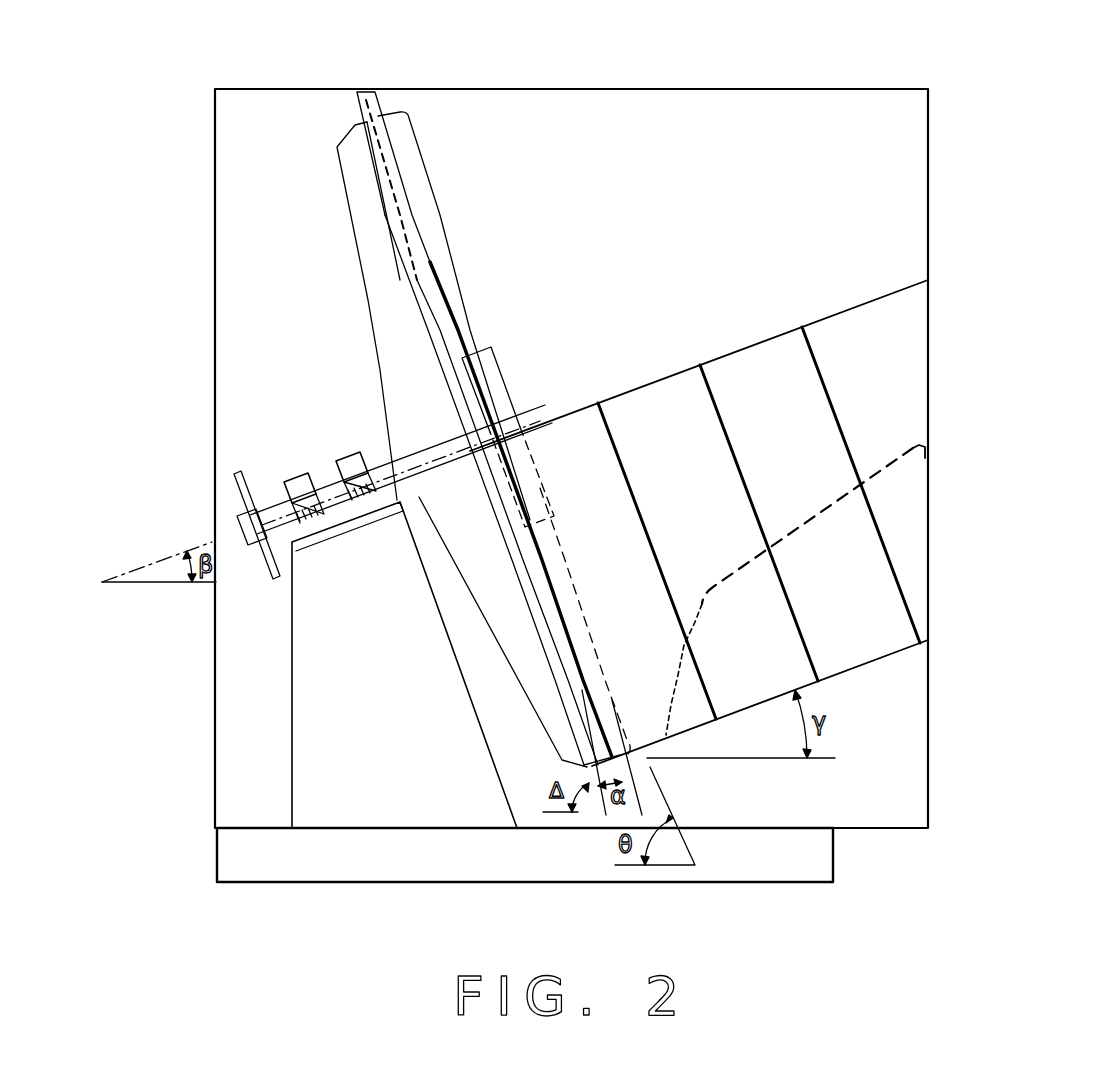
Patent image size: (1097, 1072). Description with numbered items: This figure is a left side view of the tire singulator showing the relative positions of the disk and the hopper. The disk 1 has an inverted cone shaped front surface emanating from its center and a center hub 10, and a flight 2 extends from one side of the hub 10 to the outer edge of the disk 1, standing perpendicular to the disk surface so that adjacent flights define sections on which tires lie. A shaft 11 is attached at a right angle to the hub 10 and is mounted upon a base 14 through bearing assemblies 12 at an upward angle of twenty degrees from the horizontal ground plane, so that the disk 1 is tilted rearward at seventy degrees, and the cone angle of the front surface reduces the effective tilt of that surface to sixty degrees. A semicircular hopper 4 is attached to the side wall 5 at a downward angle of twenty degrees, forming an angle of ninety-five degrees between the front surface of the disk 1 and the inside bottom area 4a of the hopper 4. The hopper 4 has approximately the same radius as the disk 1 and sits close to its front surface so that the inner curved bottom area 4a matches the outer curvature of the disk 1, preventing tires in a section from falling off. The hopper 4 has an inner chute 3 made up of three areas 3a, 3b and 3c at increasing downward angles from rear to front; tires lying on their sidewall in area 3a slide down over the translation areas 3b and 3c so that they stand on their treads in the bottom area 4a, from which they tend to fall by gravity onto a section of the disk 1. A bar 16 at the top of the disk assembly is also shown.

The disk 1 is at (425, 250).
The flight 2 is at (462, 243).
The inner chute 3 is at (893, 458).
The first chute area 3a is at (787, 537).
The translation area 3b is at (702, 607).
The translation area 3c is at (676, 678).
The semi circular hopper 4 is at (830, 312).
The inside bottom area 4a is at (665, 735).
The side wall 5 is at (832, 88).
The center hub 10 is at (500, 353).
The shaft 11 is at (273, 498).
The bearing assemblies 12 is at (350, 458).
The base 14 is at (293, 755).
The clamp bar 16 is at (357, 100).